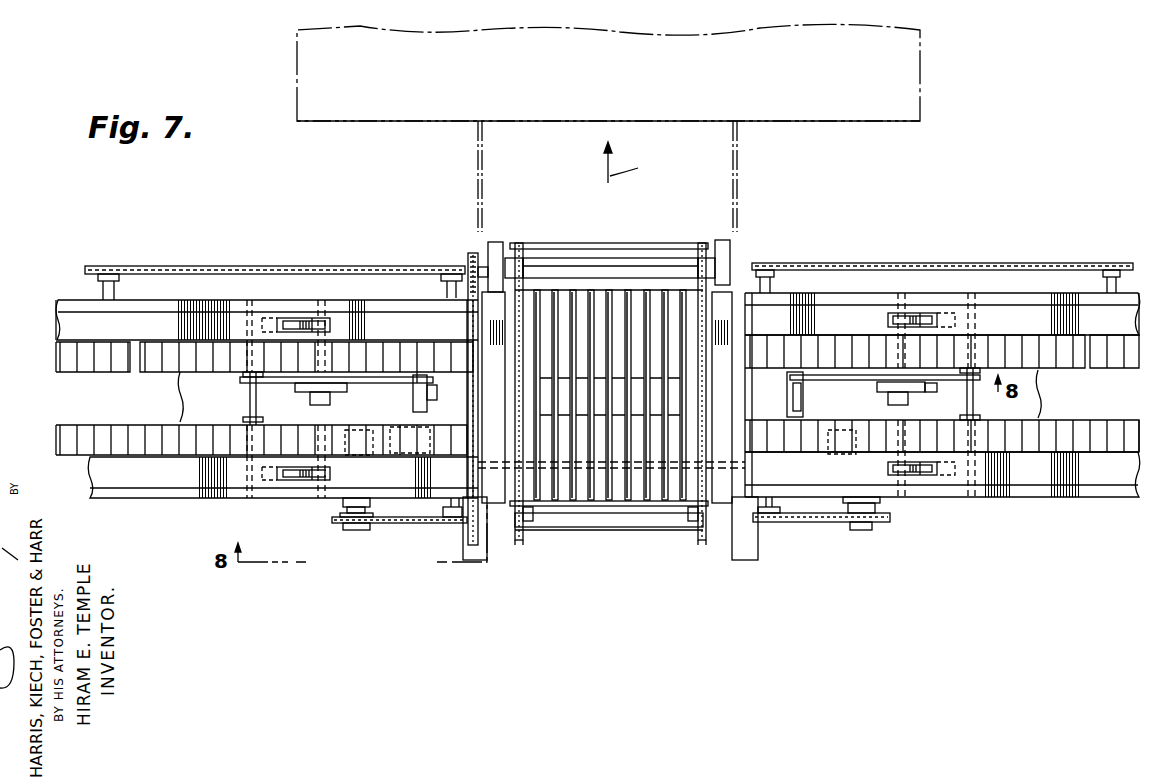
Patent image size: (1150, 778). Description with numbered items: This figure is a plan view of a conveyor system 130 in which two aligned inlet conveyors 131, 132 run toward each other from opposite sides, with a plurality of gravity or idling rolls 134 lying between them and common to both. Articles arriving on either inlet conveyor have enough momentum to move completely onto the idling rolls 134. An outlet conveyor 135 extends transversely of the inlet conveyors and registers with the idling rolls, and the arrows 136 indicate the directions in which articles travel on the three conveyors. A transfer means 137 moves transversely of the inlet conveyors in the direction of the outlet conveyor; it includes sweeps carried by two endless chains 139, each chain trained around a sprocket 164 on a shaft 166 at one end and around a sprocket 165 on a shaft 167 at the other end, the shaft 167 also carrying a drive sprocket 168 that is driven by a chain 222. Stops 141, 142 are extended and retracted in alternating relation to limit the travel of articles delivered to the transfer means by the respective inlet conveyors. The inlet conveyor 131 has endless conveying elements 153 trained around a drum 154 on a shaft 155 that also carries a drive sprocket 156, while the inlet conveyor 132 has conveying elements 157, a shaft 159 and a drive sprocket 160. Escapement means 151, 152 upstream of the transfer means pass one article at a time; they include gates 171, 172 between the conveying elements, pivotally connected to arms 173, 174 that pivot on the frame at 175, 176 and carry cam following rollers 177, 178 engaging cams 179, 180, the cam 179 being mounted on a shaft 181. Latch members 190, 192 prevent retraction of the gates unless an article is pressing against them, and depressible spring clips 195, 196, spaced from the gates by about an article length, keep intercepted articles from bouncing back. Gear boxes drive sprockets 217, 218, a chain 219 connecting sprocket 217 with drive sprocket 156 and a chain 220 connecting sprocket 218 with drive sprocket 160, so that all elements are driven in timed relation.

The conveyor system 130 is at (497, 597).
The inlet conveyor 131 is at (193, 488).
The inlet conveyor 132 is at (1019, 478).
The idling rolls 134 is at (602, 498).
The outlet conveyor 135 is at (748, 160).
The arrows 136 is at (30, 406).
The transfer means 137 is at (697, 548).
The endless chains 139 is at (520, 545).
The stop 141 is at (770, 470).
The stop 142 is at (468, 480).
The escapement means 151 is at (415, 370).
The escapement means 152 is at (796, 375).
The endless conveying elements 153 is at (183, 345).
The drum 154 is at (438, 355).
The shaft 155 is at (440, 438).
The drive sprocket 156 is at (447, 517).
The endless conveying elements 157 is at (1043, 342).
The shaft 159 is at (775, 415).
The drive sprocket 160 is at (778, 522).
The sprocket 164 is at (530, 516).
The sprocket 165 is at (522, 255).
The shaft 166 is at (642, 520).
The shaft 167 is at (578, 270).
The drive sprocket 168 is at (486, 258).
The gate 171 is at (420, 408).
The gate 172 is at (798, 402).
The arm 173 is at (243, 419).
The arm 174 is at (968, 423).
The pivot 175 is at (248, 393).
The pivot 176 is at (975, 372).
The cam following roller 177 is at (300, 397).
The cam following roller 178 is at (920, 392).
The cam 179 is at (345, 403).
The cam 180 is at (885, 390).
The shaft 181 is at (314, 420).
The latch member 190 is at (800, 390).
The latch member 192 is at (413, 390).
The spring clip 195 is at (312, 318).
The spring clip 196 is at (915, 313).
The sprocket 217 is at (363, 530).
The sprocket 218 is at (870, 530).
The chain 219 is at (418, 524).
The chain 220 is at (822, 523).
The chain 222 is at (466, 256).